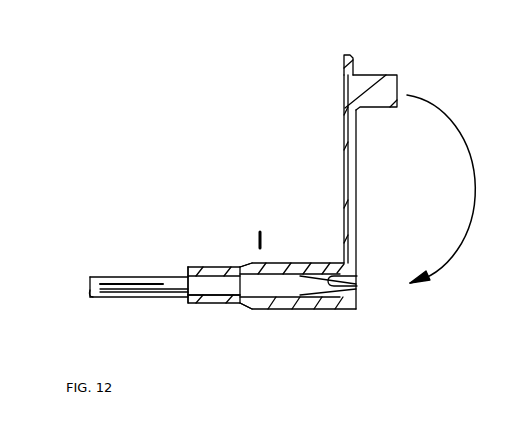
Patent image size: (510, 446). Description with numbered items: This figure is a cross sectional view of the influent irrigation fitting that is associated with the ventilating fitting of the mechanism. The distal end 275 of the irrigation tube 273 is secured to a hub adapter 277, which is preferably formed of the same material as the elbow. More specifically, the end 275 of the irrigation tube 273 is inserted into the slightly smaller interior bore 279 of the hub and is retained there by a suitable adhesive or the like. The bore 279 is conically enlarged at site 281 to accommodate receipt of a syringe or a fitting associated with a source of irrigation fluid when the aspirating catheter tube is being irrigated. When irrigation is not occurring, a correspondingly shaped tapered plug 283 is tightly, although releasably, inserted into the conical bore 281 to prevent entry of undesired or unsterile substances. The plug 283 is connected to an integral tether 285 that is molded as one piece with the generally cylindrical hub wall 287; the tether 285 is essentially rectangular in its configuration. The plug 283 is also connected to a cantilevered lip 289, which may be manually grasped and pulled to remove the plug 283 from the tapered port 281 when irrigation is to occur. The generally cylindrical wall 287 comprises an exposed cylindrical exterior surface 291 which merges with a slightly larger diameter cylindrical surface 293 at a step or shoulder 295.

The irrigation tube 273 is at (108, 280).
The distal end of irrigation tube 275 is at (227, 292).
The hub adapter 277 is at (262, 232).
The interior bore 279 is at (205, 268).
The conical bore 281 is at (353, 276).
The plug 283 is at (378, 92).
The tether 285 is at (350, 185).
The hub wall 287 is at (232, 267).
The cantilevered lip 289 is at (353, 57).
The exterior surface 291 is at (205, 285).
The cylindrical surface 293 is at (280, 268).
The shoulder 295 is at (245, 308).